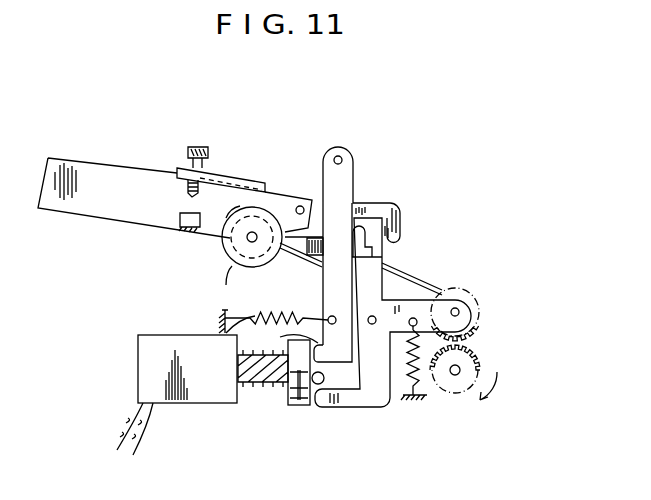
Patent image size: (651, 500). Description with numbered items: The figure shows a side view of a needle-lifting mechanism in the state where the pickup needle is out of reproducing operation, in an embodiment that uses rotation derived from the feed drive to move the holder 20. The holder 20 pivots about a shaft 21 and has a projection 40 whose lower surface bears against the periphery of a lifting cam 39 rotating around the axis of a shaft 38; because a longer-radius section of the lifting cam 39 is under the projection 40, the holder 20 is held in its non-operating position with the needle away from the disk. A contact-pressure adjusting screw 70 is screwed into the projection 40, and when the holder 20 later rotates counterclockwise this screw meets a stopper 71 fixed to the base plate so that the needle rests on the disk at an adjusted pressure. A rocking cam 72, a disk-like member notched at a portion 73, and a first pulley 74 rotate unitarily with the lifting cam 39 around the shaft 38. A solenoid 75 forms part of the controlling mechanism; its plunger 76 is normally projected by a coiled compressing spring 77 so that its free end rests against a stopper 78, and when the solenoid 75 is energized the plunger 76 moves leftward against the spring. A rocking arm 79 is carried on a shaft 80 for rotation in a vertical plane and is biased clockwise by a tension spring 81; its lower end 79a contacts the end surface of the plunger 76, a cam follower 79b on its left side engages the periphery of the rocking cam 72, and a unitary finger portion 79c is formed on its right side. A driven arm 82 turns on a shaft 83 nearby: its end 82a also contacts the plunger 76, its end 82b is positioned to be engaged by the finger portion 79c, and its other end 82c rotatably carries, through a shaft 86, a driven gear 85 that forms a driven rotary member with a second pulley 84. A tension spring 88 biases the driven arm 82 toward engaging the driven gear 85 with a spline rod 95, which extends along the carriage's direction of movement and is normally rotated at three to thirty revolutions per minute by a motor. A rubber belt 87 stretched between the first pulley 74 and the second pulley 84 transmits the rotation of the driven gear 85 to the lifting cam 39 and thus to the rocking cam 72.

The holder 20 is at (65, 158).
The shaft 21 is at (300, 206).
The shaft 38 is at (250, 238).
The lifting cam 39 is at (268, 215).
The projection 40 is at (240, 200).
The contact-pressure adjusting screw 70 is at (190, 152).
The stopper 71 is at (178, 215).
The rocking cam 72 is at (268, 212).
The notch 73 is at (229, 308).
The first pulley 74 is at (222, 170).
The solenoid 75 is at (183, 403).
The plunger 76 is at (297, 406).
The coiled compressing spring 77 is at (263, 392).
The stopper 78 is at (317, 385).
The rocking arm 79 is at (365, 182).
The lower end 79a is at (272, 336).
The cam follower 79b is at (300, 306).
The finger portion 79c is at (398, 239).
The shaft 80 is at (340, 156).
The tension spring 81 is at (224, 333).
The driven arm 82 is at (382, 420).
The end 82a is at (313, 407).
The end 82b is at (365, 228).
The other end 82c is at (440, 300).
The shaft 83 is at (404, 397).
The second pulley 84 is at (480, 298).
The driven gear 85 is at (472, 318).
The shaft 86 is at (468, 292).
The rubber belt 87 is at (412, 279).
The tension spring 88 is at (417, 380).
The spline rod 95 is at (483, 367).